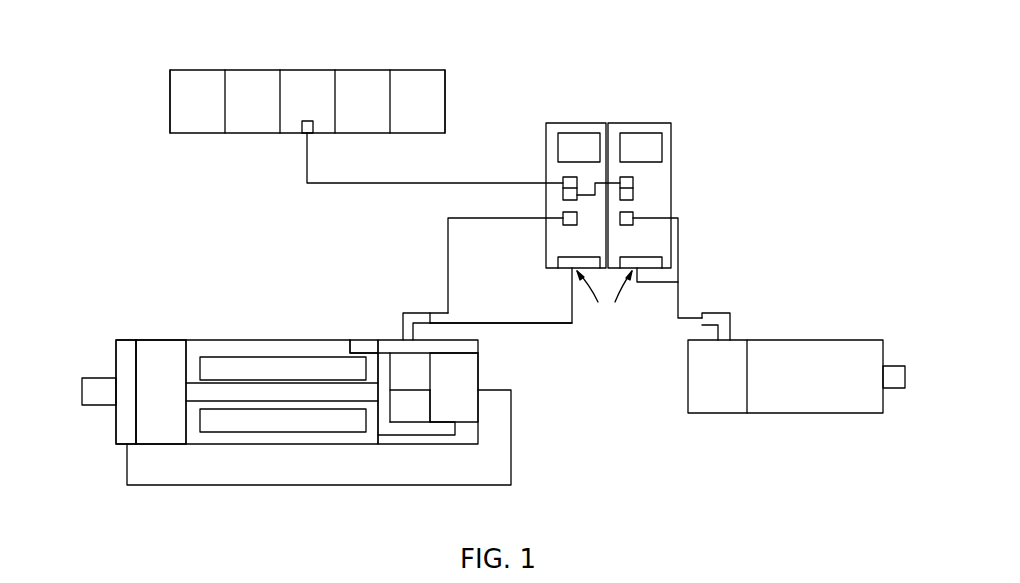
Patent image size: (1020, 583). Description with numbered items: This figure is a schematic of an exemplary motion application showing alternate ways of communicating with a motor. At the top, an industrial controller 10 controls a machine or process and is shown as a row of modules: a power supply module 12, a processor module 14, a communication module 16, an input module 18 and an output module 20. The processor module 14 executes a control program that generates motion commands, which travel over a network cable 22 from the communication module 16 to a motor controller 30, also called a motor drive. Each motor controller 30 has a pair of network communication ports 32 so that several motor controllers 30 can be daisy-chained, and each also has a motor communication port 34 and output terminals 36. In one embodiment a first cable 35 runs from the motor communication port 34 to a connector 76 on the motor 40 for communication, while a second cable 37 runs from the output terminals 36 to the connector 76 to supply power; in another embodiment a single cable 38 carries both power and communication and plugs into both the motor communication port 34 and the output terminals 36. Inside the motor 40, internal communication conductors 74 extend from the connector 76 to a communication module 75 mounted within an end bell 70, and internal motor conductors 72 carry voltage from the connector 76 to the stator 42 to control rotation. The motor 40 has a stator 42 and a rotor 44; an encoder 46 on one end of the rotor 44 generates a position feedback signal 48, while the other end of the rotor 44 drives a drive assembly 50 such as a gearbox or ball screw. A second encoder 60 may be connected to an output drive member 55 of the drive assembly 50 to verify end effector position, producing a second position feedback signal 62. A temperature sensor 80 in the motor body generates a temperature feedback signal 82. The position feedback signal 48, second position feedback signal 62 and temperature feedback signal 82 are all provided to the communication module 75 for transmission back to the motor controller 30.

The industrial controller 10 is at (100, 60).
The power supply module 12 is at (200, 70).
The processor module 14 is at (250, 70).
The communication module 16 is at (310, 70).
The input module 18 is at (363, 70).
The output module 20 is at (420, 70).
The network cable 22 is at (400, 183).
The motor controller 30 is at (585, 123).
The network communication port 32 is at (563, 180).
The motor communication port 34 is at (633, 215).
The first cable 35 is at (448, 245).
The output terminals 36 is at (604, 303).
The second cable 37 is at (525, 325).
The single cable 38 is at (680, 298).
The motor 40 is at (265, 340).
The stator 42 is at (312, 357).
The rotor 44 is at (357, 395).
The encoder 46 is at (384, 438).
The position feedback signal 48 is at (410, 390).
The drive assembly 50 is at (161, 392).
The output drive member 55 is at (80, 385).
The second encoder 60 is at (125, 340).
The second position feedback signal 62 is at (160, 485).
The end bell 70 is at (420, 445).
The internal motor conductors 72 is at (390, 345).
The internal communication conductors 74 is at (445, 326).
The communication module 75 is at (454, 387).
The connector 76 is at (420, 311).
The temperature sensor 80 is at (372, 438).
The temperature feedback signal 82 is at (415, 435).